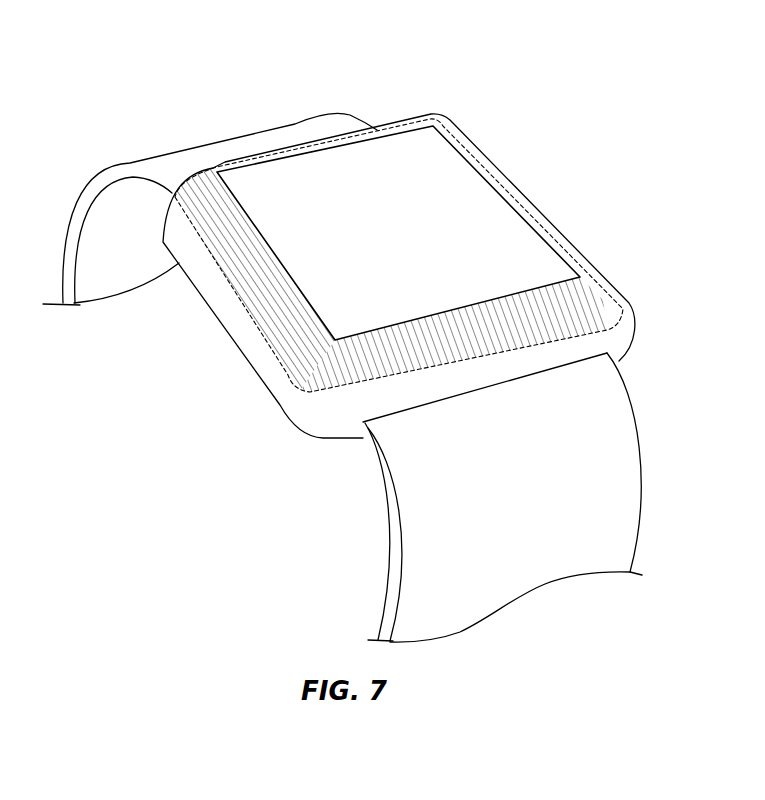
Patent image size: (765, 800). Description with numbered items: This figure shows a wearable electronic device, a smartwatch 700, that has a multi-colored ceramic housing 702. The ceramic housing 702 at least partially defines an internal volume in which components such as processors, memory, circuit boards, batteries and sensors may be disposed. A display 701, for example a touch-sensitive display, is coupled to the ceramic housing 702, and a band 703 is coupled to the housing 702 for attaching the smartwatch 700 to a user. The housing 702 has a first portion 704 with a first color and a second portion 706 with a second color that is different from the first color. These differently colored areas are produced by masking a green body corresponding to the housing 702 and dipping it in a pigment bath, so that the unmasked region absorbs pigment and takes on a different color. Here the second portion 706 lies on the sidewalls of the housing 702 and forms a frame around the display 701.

The smartwatch 700 is at (153, 66).
The display 701 is at (408, 155).
The ceramic housing 702 is at (535, 196).
The band 703 is at (641, 418).
The first portion 704 is at (238, 343).
The second portion 706 is at (243, 305).